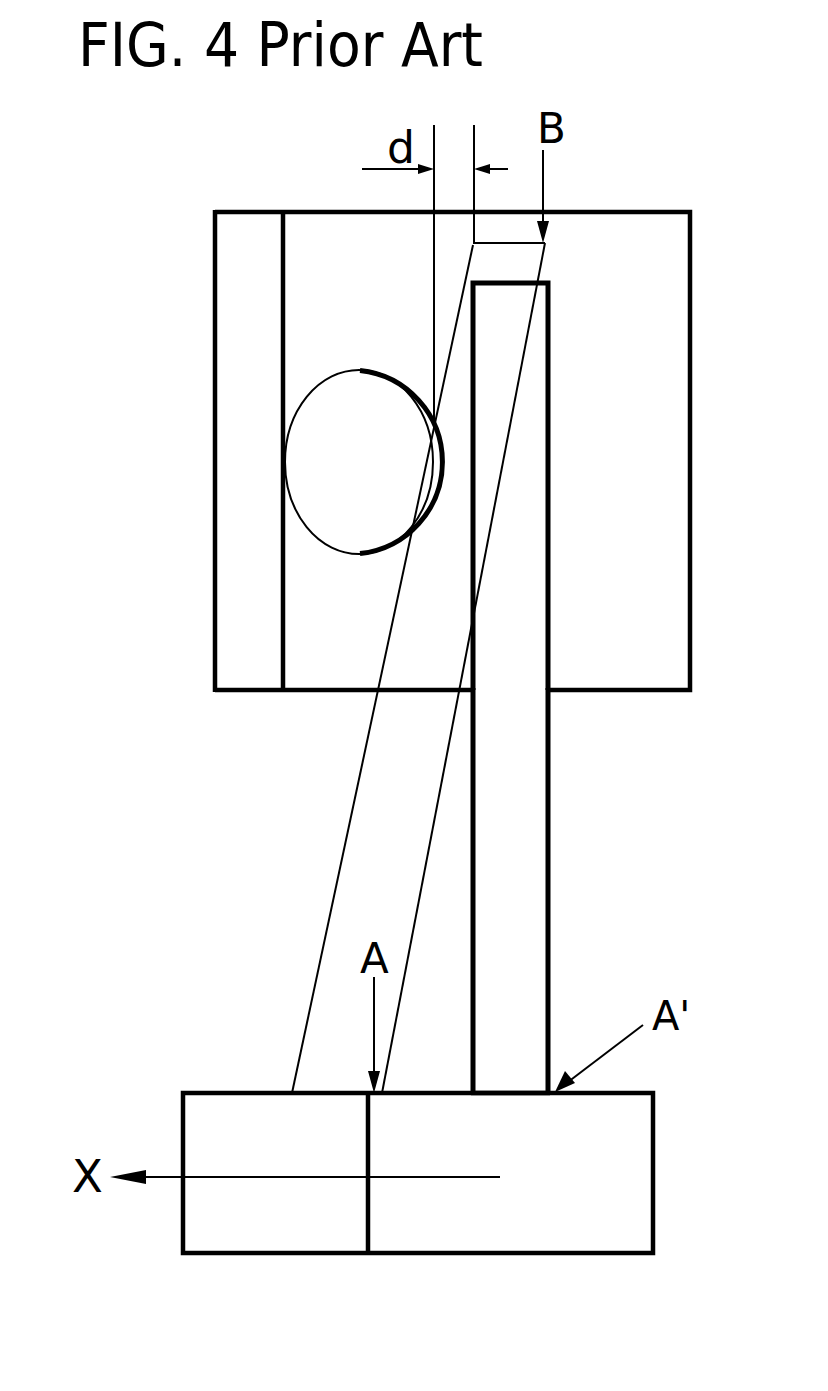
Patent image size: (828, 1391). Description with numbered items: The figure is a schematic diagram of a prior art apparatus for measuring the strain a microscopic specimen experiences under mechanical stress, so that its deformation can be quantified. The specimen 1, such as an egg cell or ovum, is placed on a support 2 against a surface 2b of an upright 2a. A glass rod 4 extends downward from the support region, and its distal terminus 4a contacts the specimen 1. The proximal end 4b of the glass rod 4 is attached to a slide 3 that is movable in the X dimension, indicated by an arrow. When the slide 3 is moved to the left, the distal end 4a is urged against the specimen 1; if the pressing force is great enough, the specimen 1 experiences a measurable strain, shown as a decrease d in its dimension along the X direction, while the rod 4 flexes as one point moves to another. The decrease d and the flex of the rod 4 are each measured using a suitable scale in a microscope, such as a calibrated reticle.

The specimen 1 is at (340, 475).
The support 2 is at (323, 290).
The upright 2a is at (243, 395).
The surface 2b is at (283, 323).
The slide 3 is at (623, 1158).
The glass rod 4 is at (520, 852).
The distal terminus 4a is at (550, 418).
The proximal end 4b is at (527, 1067).